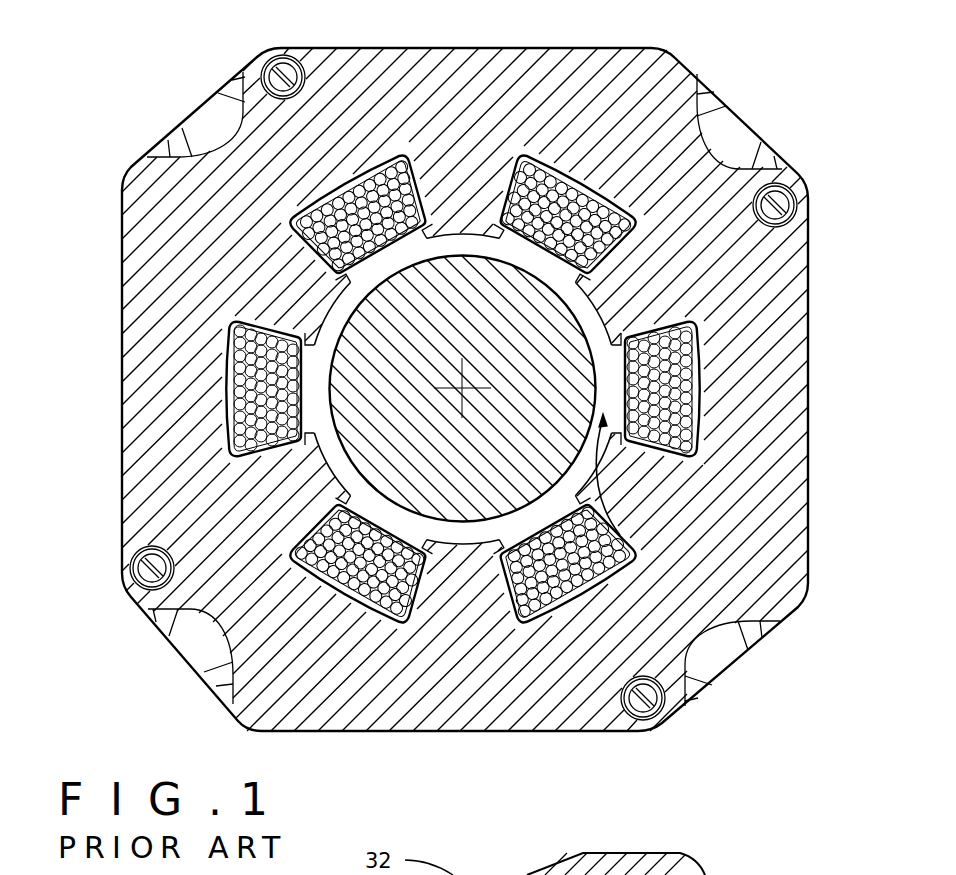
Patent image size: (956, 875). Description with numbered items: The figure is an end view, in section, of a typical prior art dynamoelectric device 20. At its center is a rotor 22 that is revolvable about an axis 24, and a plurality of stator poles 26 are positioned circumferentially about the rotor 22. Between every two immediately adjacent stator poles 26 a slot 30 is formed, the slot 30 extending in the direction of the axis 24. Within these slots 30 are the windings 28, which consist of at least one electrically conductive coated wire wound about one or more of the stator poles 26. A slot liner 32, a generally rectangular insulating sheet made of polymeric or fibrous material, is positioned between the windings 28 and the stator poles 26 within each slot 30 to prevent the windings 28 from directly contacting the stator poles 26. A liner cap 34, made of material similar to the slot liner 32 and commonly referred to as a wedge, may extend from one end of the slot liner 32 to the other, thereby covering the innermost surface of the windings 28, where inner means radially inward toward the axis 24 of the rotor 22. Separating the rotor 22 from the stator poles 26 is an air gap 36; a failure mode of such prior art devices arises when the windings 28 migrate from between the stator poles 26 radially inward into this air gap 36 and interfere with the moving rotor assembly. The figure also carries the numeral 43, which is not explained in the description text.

The dynamoelectric device 20 is at (199, 79).
The rotor 22 is at (400, 333).
The axis 24 is at (460, 390).
The stator poles 26 is at (653, 293).
The windings 28 is at (573, 177).
The slot 30 is at (600, 383).
The slot liner 32 is at (532, 152).
The liner cap 34 is at (479, 228).
The air gap 36 is at (620, 535).
The slot liner 43 is at (532, 613).